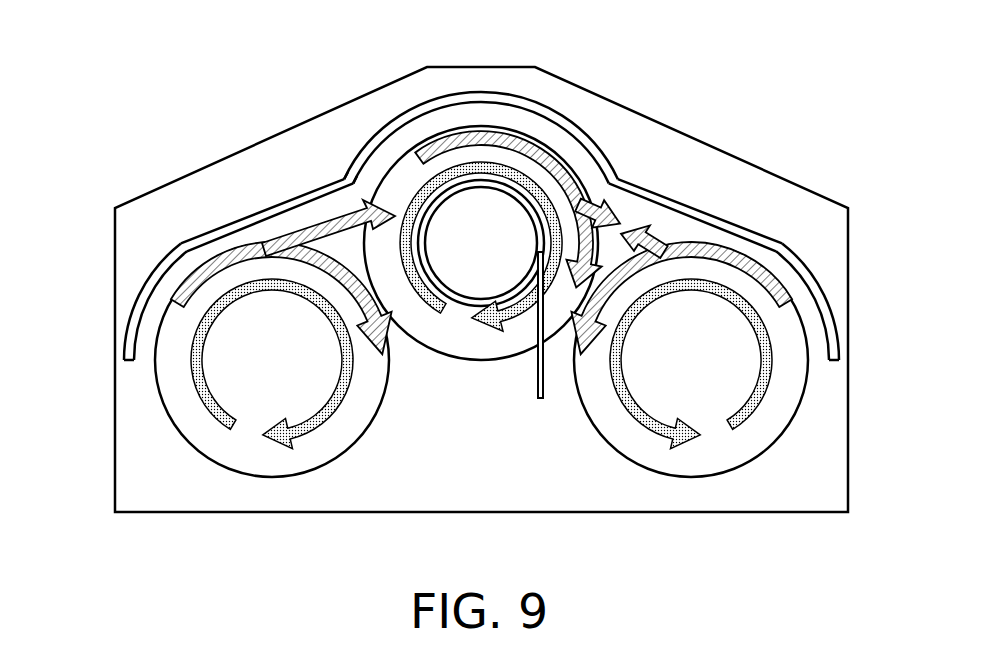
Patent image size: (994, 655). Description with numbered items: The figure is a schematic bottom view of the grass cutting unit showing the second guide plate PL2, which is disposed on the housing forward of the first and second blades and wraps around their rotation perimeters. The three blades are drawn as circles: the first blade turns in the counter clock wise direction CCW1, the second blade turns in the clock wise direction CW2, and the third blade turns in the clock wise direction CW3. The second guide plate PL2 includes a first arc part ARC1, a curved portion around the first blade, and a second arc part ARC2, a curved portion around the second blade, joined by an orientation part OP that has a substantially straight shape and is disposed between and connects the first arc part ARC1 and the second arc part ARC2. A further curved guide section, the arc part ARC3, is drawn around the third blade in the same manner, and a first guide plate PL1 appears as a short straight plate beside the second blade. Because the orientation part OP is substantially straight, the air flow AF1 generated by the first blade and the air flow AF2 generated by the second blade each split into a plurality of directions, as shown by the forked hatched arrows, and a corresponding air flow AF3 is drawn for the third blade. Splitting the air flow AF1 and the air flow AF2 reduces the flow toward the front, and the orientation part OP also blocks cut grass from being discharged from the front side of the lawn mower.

The first arc part ARC1 is at (830, 305).
The second arc part ARC2 is at (486, 96).
The third arc-shaped guide wall ARC3 is at (140, 311).
The orientation part OP is at (248, 217).
The first partition plate PL1 is at (537, 397).
The second guide plate PL2 is at (358, 160).
The air flow AF1 is at (770, 290).
The air flow AF2 is at (544, 150).
The third airflow AF3 is at (190, 286).
The clock wise direction CW2 is at (436, 308).
The clock wise direction CW3 is at (192, 376).
The counter clock wise direction CCW1 is at (770, 382).